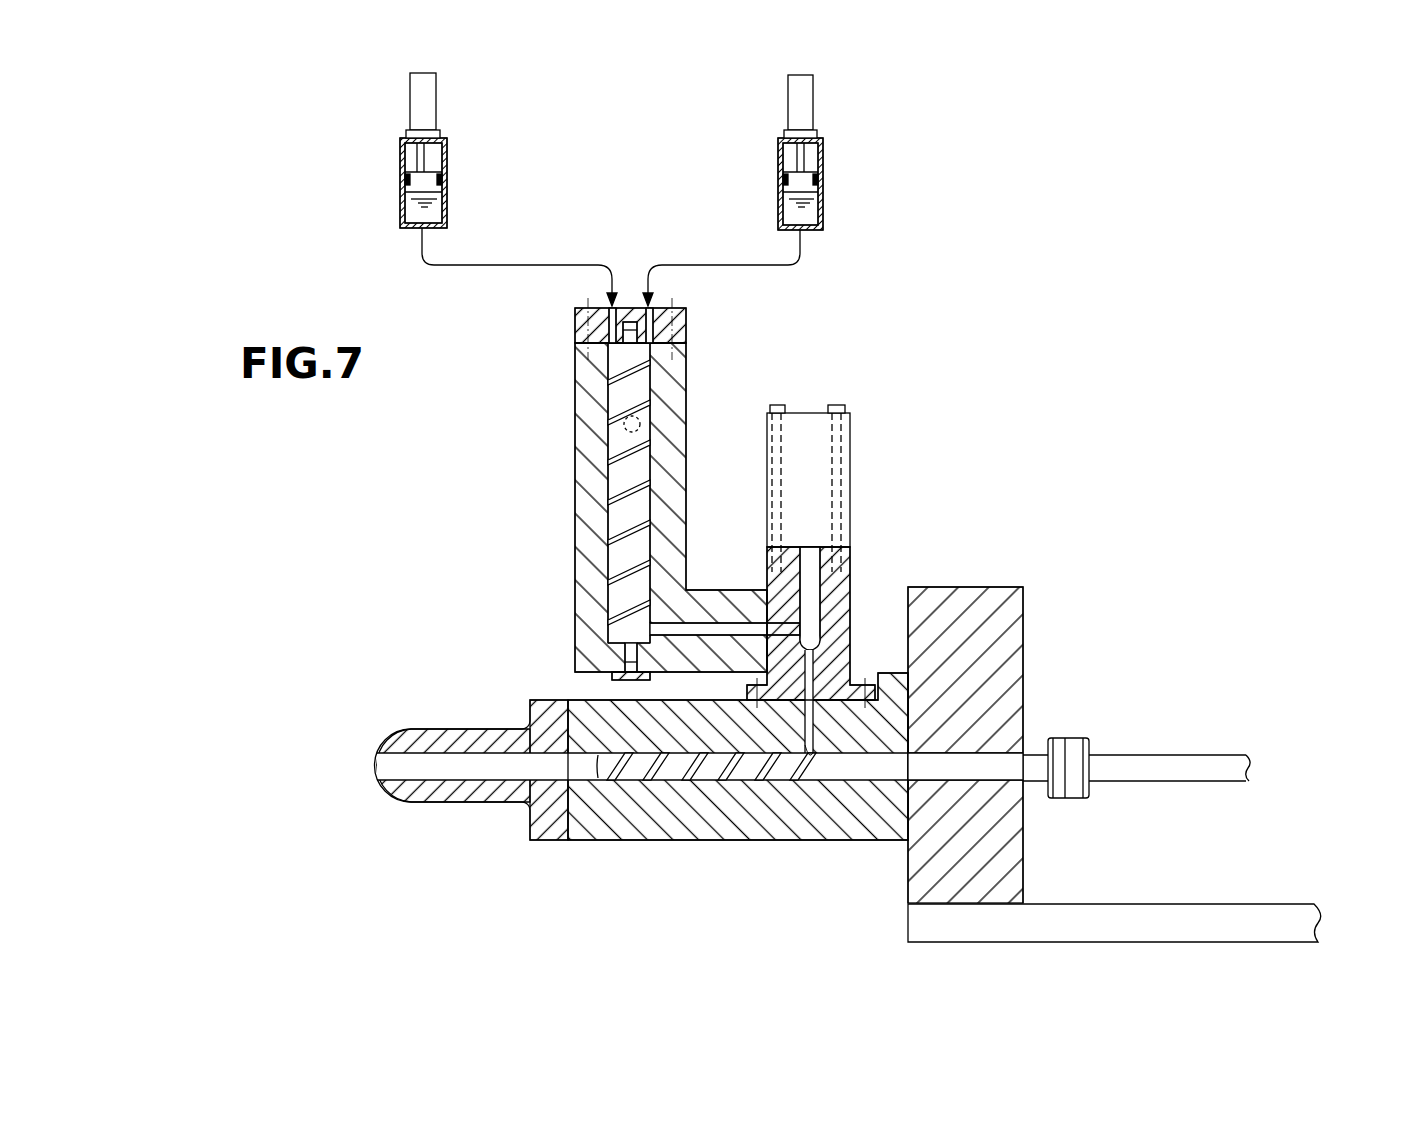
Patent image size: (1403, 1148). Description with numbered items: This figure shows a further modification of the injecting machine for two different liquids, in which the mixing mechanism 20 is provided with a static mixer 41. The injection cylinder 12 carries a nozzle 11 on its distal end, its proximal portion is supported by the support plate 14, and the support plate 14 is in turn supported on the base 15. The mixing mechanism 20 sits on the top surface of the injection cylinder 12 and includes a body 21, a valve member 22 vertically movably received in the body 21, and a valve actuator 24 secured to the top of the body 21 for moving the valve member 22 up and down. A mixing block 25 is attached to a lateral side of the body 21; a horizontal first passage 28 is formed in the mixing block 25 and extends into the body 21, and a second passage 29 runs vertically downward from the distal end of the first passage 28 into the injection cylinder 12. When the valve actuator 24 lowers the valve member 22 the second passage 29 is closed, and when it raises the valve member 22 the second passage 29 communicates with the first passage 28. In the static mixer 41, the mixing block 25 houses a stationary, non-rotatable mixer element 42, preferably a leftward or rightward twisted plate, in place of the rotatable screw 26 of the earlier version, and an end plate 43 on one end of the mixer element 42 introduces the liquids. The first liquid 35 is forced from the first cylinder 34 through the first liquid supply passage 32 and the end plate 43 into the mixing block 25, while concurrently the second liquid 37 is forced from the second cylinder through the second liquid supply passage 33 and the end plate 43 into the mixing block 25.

The nozzle 11 is at (456, 790).
The injection cylinder 12 is at (699, 778).
The support plate 14 is at (1022, 618).
The base 15 is at (1140, 920).
The mixing mechanism 20 is at (706, 503).
The body 21 is at (845, 582).
The valve member 22 is at (812, 607).
The valve actuator 24 is at (852, 461).
The mixing block 25 is at (578, 604).
The screw 26 is at (825, 165).
The first passage 28 is at (722, 626).
The second passage 29 is at (808, 782).
The first liquid supply passage 32 is at (516, 264).
The second liquid supply passage 33 is at (692, 264).
The first cylinder 34 is at (400, 178).
The first liquid 35 is at (405, 203).
The second liquid 37 is at (825, 206).
The static mixer 41 is at (633, 489).
The mixer element 42 is at (625, 447).
The end plate 43 is at (578, 331).